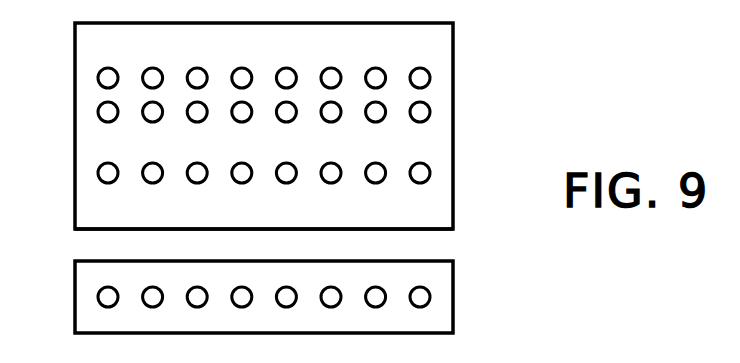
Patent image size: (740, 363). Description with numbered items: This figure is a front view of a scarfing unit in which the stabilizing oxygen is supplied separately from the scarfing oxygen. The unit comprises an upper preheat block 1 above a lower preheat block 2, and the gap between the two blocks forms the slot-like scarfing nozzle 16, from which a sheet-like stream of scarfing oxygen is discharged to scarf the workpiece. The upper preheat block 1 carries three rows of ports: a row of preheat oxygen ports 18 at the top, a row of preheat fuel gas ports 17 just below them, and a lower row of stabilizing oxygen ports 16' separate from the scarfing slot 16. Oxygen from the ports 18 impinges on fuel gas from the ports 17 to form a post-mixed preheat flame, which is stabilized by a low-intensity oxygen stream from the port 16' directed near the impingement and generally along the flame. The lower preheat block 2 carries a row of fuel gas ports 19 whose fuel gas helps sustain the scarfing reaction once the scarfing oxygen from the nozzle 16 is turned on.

The upper preheat block 1 is at (72, 141).
The lower preheat block 2 is at (72, 300).
The scarfing nozzle 16 is at (288, 242).
The stabilizing oxygen port 16' is at (458, 179).
The preheat fuel gas ports 17 is at (421, 112).
The preheat oxygen ports 18 is at (421, 78).
The fuel gas ports 19 is at (421, 297).